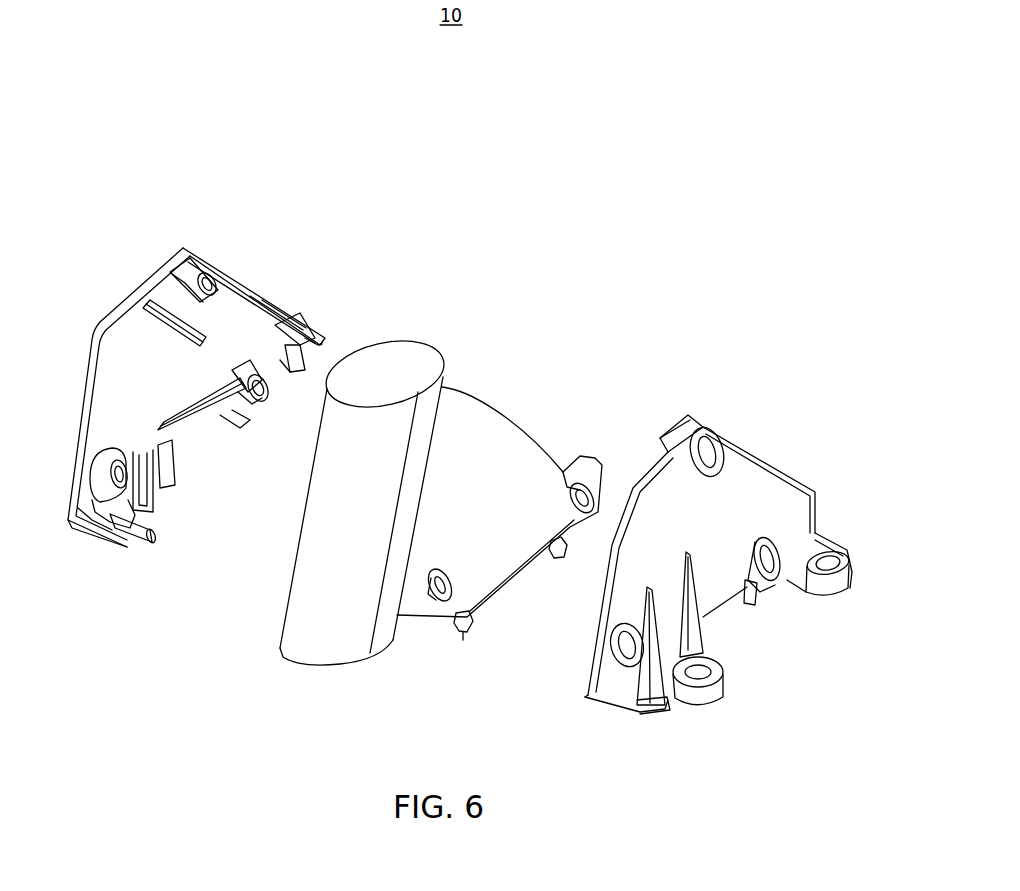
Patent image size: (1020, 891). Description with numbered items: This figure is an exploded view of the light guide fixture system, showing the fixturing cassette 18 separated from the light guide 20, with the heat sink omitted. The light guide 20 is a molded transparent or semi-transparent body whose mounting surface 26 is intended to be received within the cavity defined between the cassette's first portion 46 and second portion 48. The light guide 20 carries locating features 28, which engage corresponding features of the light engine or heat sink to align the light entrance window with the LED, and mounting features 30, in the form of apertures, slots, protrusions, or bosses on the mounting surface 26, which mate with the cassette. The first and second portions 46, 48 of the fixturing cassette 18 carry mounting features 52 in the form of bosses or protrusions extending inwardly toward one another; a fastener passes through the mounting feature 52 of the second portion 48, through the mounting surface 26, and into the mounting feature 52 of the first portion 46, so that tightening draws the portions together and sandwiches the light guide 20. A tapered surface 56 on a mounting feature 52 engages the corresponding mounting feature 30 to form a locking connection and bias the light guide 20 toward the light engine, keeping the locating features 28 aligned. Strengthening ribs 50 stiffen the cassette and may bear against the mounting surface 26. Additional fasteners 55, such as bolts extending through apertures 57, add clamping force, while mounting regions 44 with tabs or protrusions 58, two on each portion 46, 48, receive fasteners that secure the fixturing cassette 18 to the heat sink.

The fixturing cassette 18 is at (480, 431).
The light guide 20 is at (448, 458).
The mounting surface 26 is at (480, 448).
The locating features 28 is at (462, 638).
The mounting features 30 is at (592, 483).
The mounting regions 44 is at (820, 534).
The first portion 46 is at (118, 310).
The second portion 48 is at (762, 457).
The strengthening ribs 50 is at (190, 326).
The mounting features 52 is at (116, 450).
The additional fasteners 55 is at (322, 342).
The tapered surface 56 is at (250, 365).
The apertures 57 is at (213, 276).
The tabs or protrusions 58 is at (815, 592).